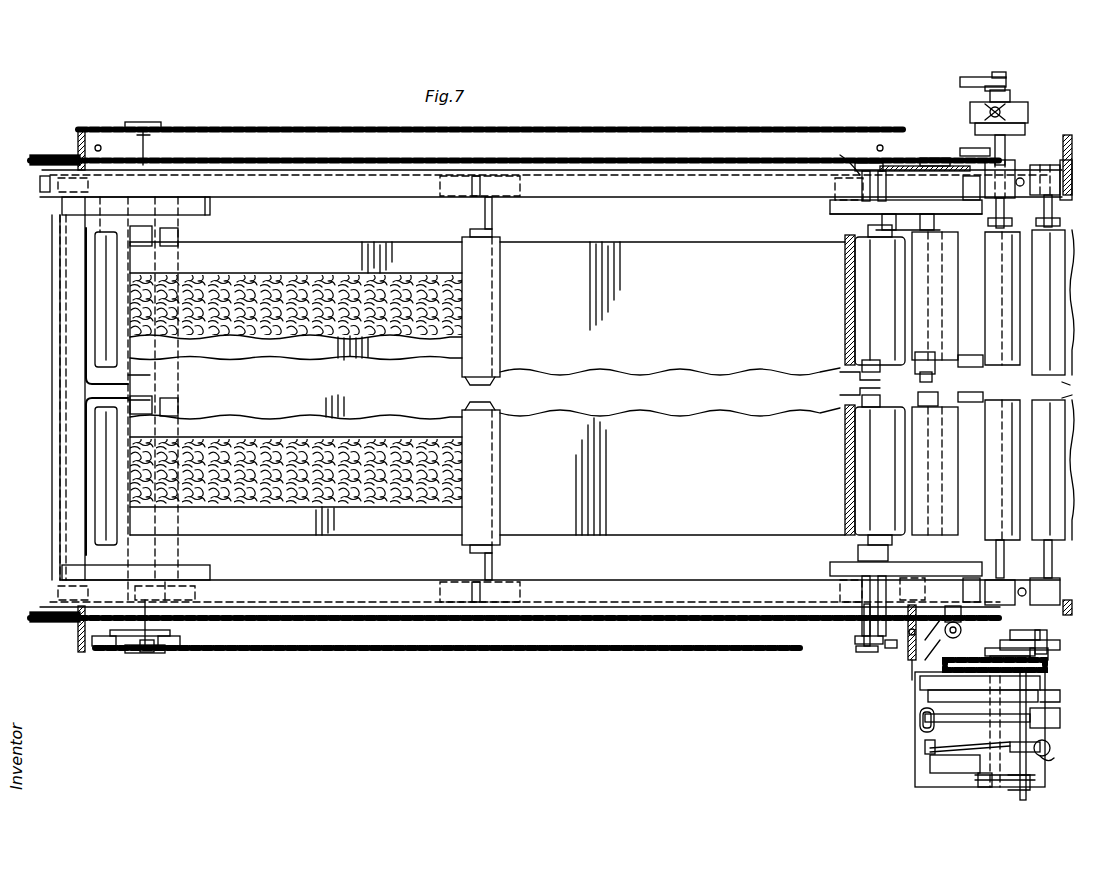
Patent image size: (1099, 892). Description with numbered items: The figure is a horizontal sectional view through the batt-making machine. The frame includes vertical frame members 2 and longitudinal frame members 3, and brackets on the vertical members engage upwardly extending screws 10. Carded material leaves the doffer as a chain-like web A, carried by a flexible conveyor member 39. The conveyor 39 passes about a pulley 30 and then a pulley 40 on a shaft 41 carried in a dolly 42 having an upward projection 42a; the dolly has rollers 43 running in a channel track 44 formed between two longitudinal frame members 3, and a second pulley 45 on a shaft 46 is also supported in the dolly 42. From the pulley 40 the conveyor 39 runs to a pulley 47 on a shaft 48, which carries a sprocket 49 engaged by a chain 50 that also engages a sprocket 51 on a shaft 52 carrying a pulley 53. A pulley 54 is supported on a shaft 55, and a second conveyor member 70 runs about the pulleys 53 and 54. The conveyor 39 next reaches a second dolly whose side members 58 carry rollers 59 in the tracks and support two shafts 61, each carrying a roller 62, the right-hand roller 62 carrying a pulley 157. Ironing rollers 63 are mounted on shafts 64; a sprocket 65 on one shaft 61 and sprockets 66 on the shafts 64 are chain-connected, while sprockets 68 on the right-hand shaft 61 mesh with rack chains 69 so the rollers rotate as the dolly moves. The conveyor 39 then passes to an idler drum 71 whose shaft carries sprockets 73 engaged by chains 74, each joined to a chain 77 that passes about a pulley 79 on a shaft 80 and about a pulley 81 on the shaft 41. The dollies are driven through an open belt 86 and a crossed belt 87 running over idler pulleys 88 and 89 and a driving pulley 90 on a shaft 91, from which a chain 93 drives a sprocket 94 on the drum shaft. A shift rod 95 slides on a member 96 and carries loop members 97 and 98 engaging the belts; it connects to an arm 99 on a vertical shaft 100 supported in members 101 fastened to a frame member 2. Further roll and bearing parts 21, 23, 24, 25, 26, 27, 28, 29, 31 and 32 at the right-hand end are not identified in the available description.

The vertical frame members 2 is at (78, 148).
The longitudinal frame members 3 is at (655, 198).
The screw 10 is at (98, 145).
The roll 21 is at (1068, 450).
The roll gap 23 is at (1072, 385).
The roll 24 is at (1058, 392).
The bearing block 25 is at (1042, 170).
The collar 26 is at (1055, 228).
The shaft 27 is at (1052, 220).
The shaft 28 is at (1005, 225).
The roll 29 is at (1000, 252).
The pulley 30 is at (1000, 283).
The bearing block 31 is at (1005, 170).
The bracket 32 is at (1047, 647).
The flexible conveyor member 39 is at (345, 425).
The pulley 40 is at (850, 318).
The shaft 41 is at (830, 226).
The dolly 42 is at (828, 213).
The upward projection 42a is at (828, 572).
The rollers 43 is at (832, 188).
The channel groove or track 44 is at (712, 206).
The second pulley 45 is at (925, 355).
The shaft 46 is at (935, 222).
The pulley 47 is at (875, 383).
The shaft 48 is at (906, 650).
The sprocket 49 is at (935, 670).
The chain 50 is at (886, 650).
The sprocket 51 is at (860, 654).
The shaft 52 is at (840, 550).
The pulley 53 is at (850, 545).
The pulley 54 is at (495, 385).
The shaft 55 is at (492, 212).
The dolly side members 58 is at (68, 222).
The rollers 59 is at (208, 200).
The shafts 61 is at (150, 158).
The pulley or roller 62 is at (180, 238).
The ironing rollers 63 is at (86, 362).
The shafts 64 is at (142, 593).
The sprocket 65 is at (152, 655).
The sprocket 66 is at (182, 640).
The sprocket 68 is at (146, 123).
The rack 69 is at (296, 128).
The second conveyor member 70 is at (634, 350).
The roller or drum 71 is at (976, 534).
The sprocket 73 is at (972, 148).
The chains 74 is at (940, 163).
The chain 77 is at (524, 160).
The sprocket or pulley 79 is at (34, 160).
The shaft 80 is at (52, 473).
The sprocket or pulley 81 is at (900, 612).
The open belt 86 is at (1060, 718).
The crossed belt 87 is at (1050, 748).
The idler pulley 88 is at (948, 760).
The second idler pulley 89 is at (1050, 700).
The driving pulley 90 is at (935, 745).
The shaft 91 is at (990, 787).
The chain 93 is at (1047, 668).
The sprocket 94 is at (1050, 656).
The shift arm or rod 95 is at (1026, 796).
The member 96 is at (1035, 777).
The loop member 97 is at (1050, 756).
The second loop member 98 is at (918, 722).
The arm 99 is at (985, 654).
The vertical shaft 100 is at (953, 618).
The members 101 is at (925, 662).
The pulley 157 is at (138, 220).
The web A is at (298, 290).